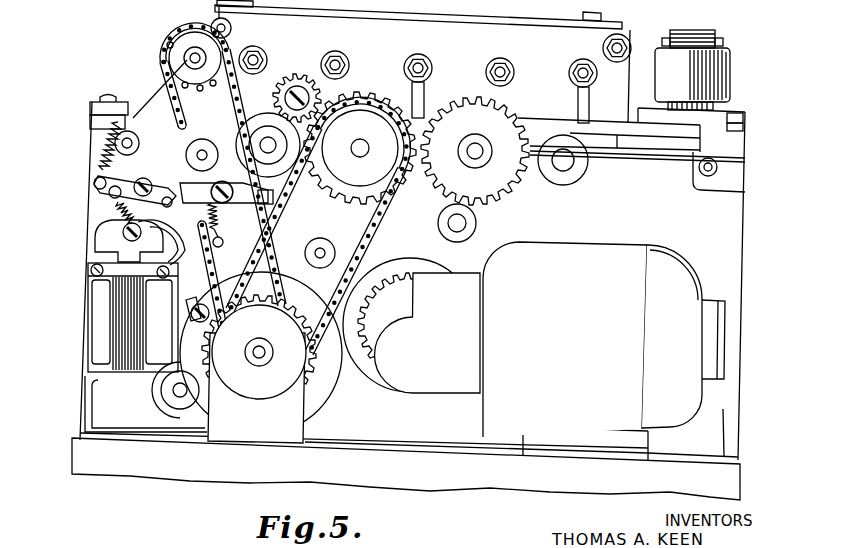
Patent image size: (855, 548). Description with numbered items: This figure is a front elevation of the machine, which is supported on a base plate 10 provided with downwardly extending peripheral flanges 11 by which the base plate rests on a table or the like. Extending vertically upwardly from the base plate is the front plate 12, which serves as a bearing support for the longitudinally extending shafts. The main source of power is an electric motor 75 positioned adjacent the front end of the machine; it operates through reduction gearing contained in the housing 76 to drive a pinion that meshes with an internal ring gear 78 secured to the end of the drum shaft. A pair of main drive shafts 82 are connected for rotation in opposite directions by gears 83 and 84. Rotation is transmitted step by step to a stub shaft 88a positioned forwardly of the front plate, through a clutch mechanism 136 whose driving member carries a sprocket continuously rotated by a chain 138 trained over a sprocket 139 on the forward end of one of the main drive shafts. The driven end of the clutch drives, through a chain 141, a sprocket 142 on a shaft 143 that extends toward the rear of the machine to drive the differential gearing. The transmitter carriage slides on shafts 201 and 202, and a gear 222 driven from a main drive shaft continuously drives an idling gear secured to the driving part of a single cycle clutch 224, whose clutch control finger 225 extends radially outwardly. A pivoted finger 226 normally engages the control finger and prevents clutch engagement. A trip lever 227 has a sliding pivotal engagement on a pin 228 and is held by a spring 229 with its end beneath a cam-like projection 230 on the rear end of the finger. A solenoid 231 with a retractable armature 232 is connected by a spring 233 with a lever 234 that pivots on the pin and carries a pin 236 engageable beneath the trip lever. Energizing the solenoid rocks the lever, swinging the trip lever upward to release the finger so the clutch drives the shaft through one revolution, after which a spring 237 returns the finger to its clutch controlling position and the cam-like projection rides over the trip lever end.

The base plate 10 is at (72, 438).
The peripheral flanges 11 is at (406, 481).
The front plate 12 is at (703, 223).
The electric motor 75 is at (596, 330).
The housing 76 is at (444, 351).
The internal ring gear 78 is at (364, 360).
The main drive shafts 82 is at (357, 143).
The gear 83 is at (363, 92).
The gear 84 is at (503, 106).
The stub shaft 88a is at (258, 355).
The clutch mechanism 136 is at (273, 334).
The chain 138 is at (373, 243).
The sprocket 139 is at (370, 179).
The chain 141 is at (183, 110).
The sprocket 142 is at (178, 61).
The shaft 143 is at (192, 55).
The shaft 201 is at (264, 143).
The shaft 202 is at (583, 168).
The gear 222 is at (313, 68).
The single cycle clutch 224 is at (265, 118).
The clutch control finger 225 is at (297, 163).
The pivoted finger 226 is at (224, 203).
The trip lever 227 is at (162, 176).
The pin 228 is at (132, 154).
The spring 229 is at (104, 152).
The cam-like projection 230 is at (182, 188).
The solenoid 231 is at (93, 315).
The retractable armature 232 is at (107, 240).
The spring 233 is at (116, 207).
The lever 234 is at (95, 187).
The pin 236 is at (168, 205).
The spring 237 is at (222, 228).